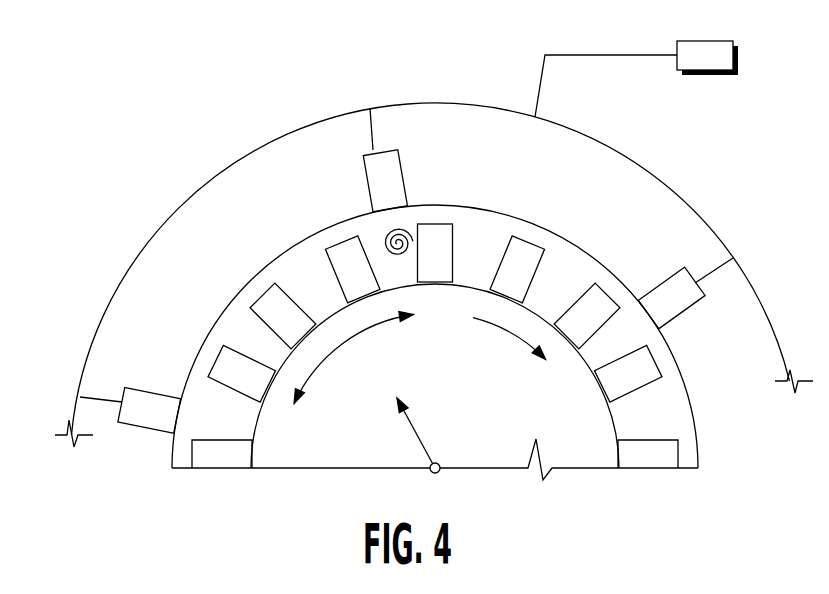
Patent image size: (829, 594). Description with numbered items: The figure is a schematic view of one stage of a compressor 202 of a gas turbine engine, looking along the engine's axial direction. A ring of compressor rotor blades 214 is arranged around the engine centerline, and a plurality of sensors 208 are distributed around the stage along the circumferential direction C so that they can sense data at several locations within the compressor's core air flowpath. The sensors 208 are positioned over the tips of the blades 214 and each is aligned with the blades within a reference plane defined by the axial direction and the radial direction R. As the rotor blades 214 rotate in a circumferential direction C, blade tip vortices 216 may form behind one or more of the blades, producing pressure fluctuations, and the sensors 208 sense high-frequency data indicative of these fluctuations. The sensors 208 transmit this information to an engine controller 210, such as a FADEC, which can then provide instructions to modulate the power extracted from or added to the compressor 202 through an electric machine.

The compressor 202 is at (660, 222).
The sensors 208 is at (385, 183).
The engine controller 210 is at (738, 60).
The compressor rotor blades 214 is at (515, 257).
The blade tip vortices 216 is at (382, 233).
The circumferential direction C is at (360, 340).
The radial direction R is at (418, 435).